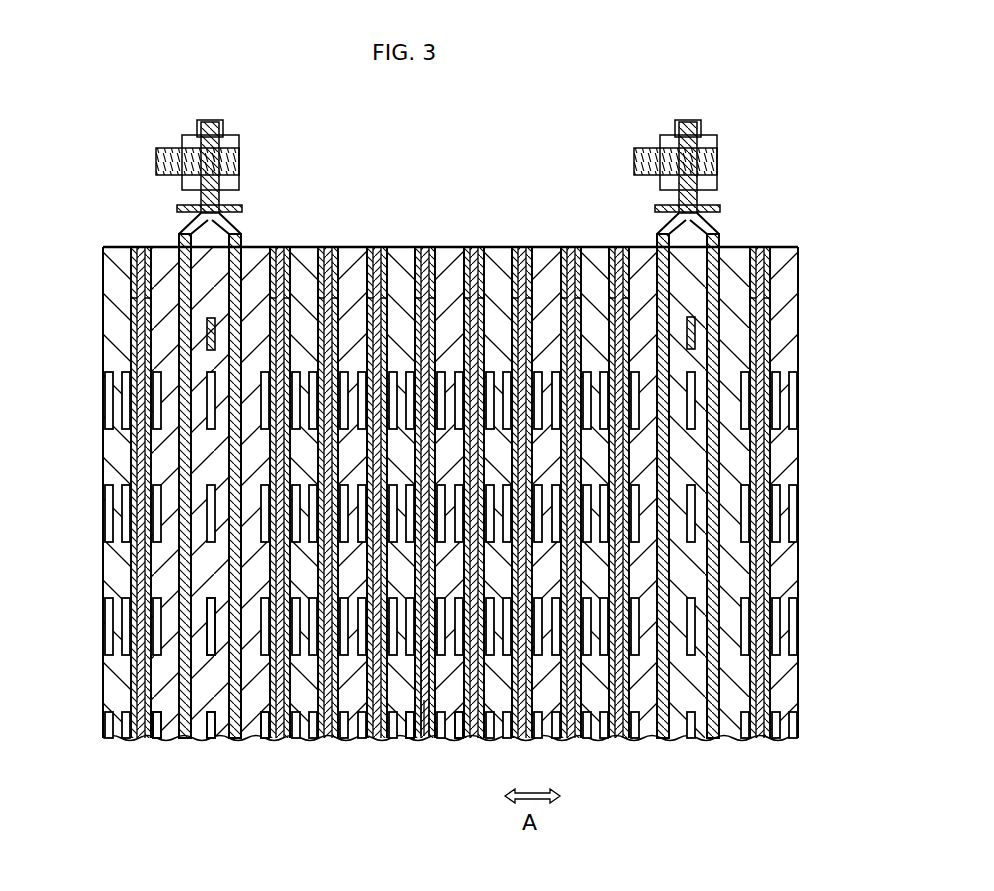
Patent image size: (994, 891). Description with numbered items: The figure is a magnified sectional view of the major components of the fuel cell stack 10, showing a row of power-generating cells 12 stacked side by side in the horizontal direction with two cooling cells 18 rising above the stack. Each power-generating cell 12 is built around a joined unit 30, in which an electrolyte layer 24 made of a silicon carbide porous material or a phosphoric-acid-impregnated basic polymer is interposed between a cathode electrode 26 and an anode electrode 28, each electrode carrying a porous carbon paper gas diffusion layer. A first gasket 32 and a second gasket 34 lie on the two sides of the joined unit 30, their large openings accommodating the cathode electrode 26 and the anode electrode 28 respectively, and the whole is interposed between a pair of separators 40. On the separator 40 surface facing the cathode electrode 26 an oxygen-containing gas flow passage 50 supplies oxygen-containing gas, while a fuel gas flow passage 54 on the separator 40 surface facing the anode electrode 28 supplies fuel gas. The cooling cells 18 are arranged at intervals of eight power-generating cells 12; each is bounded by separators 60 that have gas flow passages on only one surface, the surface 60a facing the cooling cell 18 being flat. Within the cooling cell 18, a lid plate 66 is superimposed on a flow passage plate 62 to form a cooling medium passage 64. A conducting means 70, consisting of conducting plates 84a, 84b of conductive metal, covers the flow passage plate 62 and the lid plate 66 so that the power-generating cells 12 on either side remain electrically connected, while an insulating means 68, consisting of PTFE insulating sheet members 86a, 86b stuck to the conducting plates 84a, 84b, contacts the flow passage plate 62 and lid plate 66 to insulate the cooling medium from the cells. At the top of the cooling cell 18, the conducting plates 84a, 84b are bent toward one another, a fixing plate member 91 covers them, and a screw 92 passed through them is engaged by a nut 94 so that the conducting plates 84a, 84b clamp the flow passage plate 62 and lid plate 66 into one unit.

The fuel cell stack 10 is at (563, 103).
The power-generating cell 12 is at (423, 484).
The cooling cell 18 is at (469, 430).
The electrolyte layer 24 is at (424, 742).
The cathode electrode 26 is at (420, 742).
The anode electrode 28 is at (433, 742).
The joined unit 30 is at (426, 247).
The first gasket 32 is at (419, 246).
The second gasket 34 is at (437, 247).
The separator 40 is at (398, 247).
The oxygen-containing gas flow passage 50 is at (406, 740).
The fuel gas flow passage 54 is at (451, 742).
The separator 60 is at (160, 247).
The surface 60a is at (192, 320).
The flow passage plate 62 is at (217, 503).
The cooling medium passage 64 is at (212, 572).
The lid plate 66 is at (206, 737).
The insulating means 68 is at (176, 717).
The conducting means 70 is at (176, 687).
The conducting plate 84a is at (246, 735).
The conducting plate 84b is at (190, 646).
The insulating sheet member 86a is at (239, 738).
The insulating sheet member 86b is at (243, 656).
The fixing plate member 91 is at (211, 112).
The screw 92 is at (234, 162).
The nut 94 is at (187, 150).